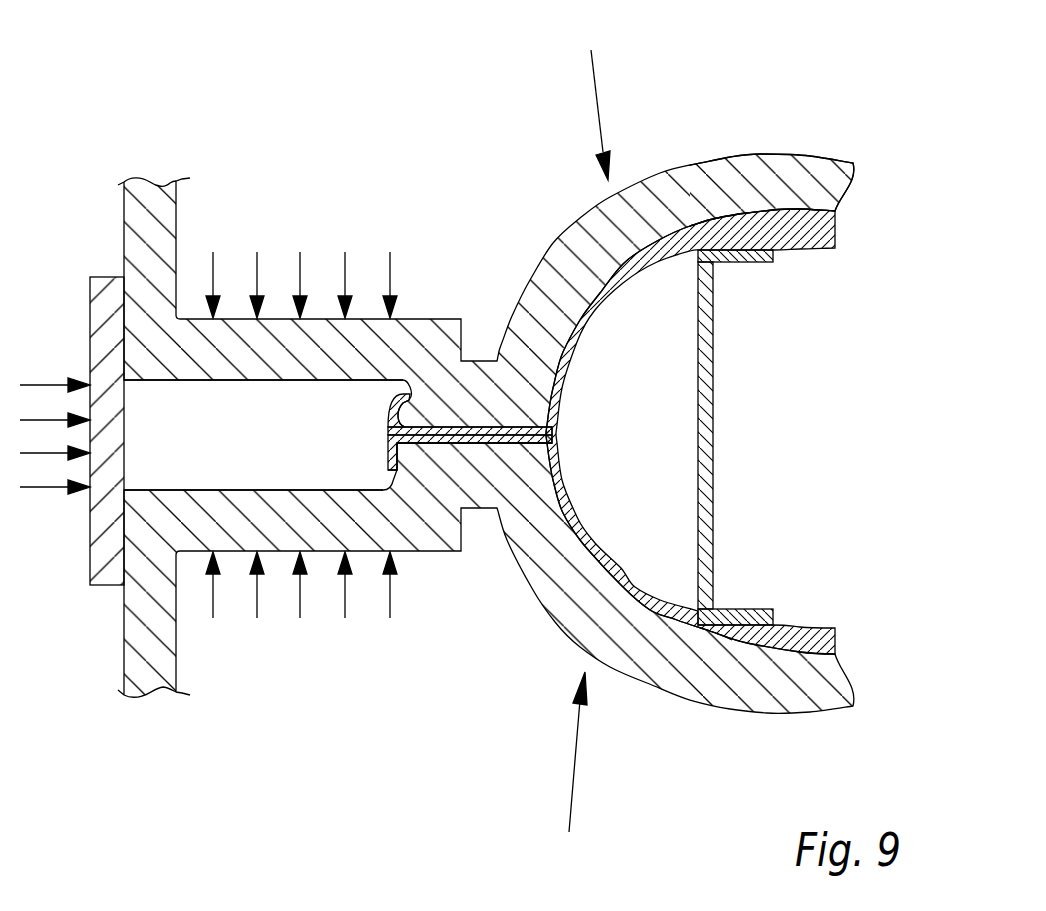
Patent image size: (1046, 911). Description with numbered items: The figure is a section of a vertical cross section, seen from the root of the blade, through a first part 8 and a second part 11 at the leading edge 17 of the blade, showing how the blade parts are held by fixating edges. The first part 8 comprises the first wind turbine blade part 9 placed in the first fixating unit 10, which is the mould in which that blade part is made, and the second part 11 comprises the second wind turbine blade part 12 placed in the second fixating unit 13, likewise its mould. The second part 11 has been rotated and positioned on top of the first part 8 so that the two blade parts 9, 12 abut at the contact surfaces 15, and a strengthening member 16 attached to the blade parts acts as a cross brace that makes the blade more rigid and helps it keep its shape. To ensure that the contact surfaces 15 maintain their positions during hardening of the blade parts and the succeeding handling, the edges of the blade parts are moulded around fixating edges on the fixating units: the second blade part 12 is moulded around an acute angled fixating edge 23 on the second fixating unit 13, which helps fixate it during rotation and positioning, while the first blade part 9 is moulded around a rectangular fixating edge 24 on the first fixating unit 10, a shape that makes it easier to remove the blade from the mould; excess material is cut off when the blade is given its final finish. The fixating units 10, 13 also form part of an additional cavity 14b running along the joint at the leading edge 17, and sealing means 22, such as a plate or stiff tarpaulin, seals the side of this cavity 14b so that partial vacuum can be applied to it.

The first part 8 is at (569, 770).
The first wind turbine blade part 9 is at (687, 617).
The first fixating unit 10 is at (745, 678).
The second part 11 is at (594, 96).
The second wind turbine blade part 12 is at (707, 236).
The second fixating unit 13 is at (773, 185).
The additional cavity 14b is at (261, 440).
The contact surface 15 is at (468, 424).
The strengthening member 16 is at (714, 468).
The leading edge 17 is at (557, 470).
The sealing means 22 is at (100, 345).
The acute angled fixating edge 23 is at (412, 392).
The rectangular fixating edge 24 is at (406, 480).